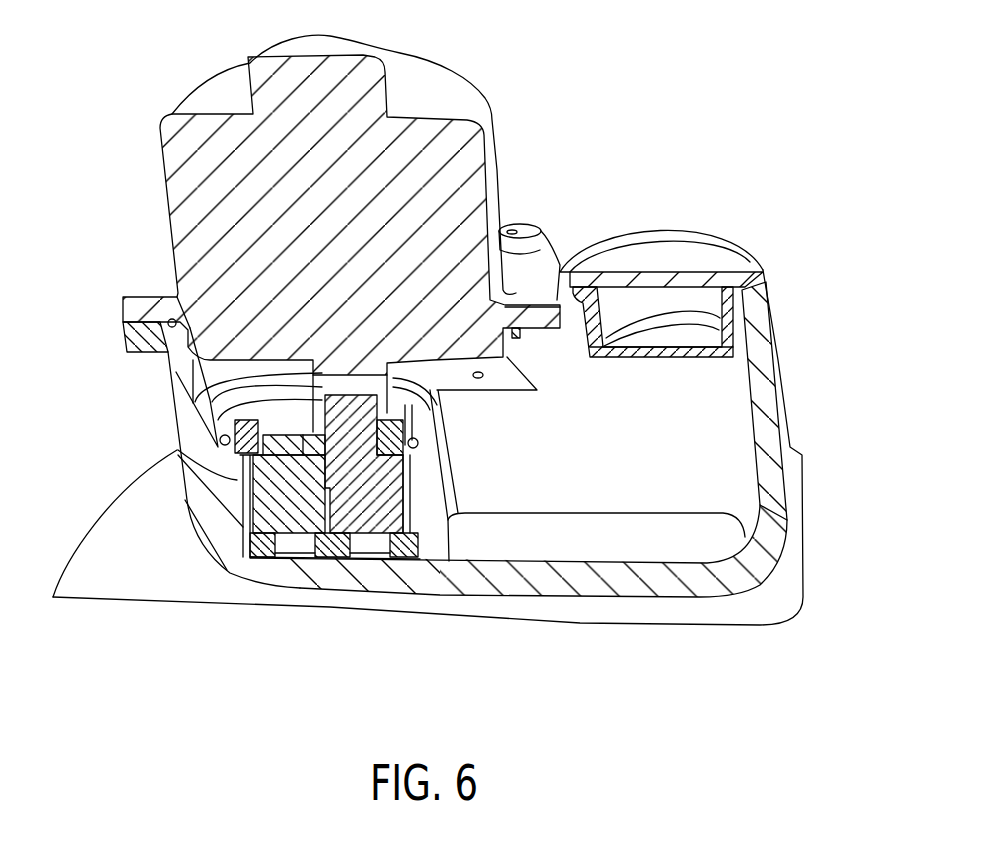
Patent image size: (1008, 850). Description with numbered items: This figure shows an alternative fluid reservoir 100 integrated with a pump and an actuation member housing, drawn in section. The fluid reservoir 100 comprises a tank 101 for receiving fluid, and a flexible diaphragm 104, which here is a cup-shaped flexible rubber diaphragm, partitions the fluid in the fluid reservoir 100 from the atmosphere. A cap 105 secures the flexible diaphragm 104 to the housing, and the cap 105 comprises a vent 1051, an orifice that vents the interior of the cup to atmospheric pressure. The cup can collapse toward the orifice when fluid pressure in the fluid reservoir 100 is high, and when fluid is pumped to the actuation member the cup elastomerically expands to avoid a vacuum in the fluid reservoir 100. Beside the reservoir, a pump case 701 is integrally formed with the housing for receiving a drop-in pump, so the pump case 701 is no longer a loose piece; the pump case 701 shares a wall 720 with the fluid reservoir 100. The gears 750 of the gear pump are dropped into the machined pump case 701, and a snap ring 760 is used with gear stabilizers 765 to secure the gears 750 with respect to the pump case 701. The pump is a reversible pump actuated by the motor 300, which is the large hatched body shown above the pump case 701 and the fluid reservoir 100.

The fluid reservoir 100 is at (790, 444).
The tank 101 is at (745, 432).
The flexible diaphragm 104 is at (657, 360).
The cap 105 is at (713, 250).
The vent 1051 is at (657, 278).
The motor 300 is at (442, 95).
The pump case 701 is at (177, 450).
The wall 720 is at (430, 510).
The gears 750 is at (363, 557).
The snap ring 760 is at (427, 390).
The gear stabilizers 765 is at (415, 447).